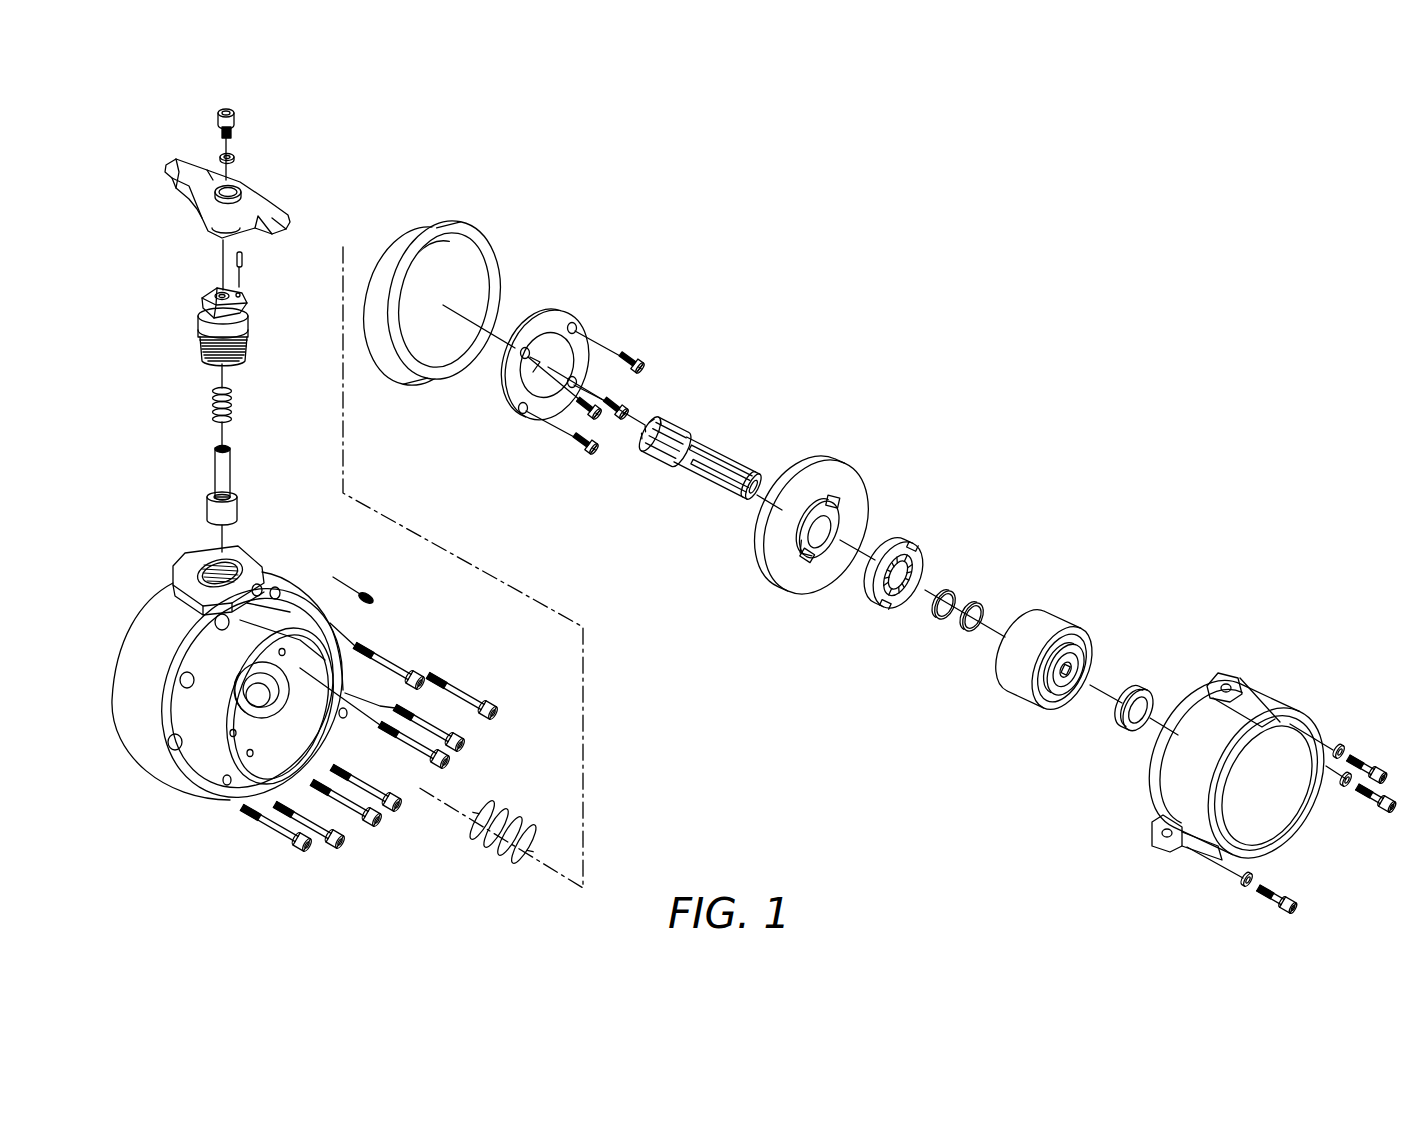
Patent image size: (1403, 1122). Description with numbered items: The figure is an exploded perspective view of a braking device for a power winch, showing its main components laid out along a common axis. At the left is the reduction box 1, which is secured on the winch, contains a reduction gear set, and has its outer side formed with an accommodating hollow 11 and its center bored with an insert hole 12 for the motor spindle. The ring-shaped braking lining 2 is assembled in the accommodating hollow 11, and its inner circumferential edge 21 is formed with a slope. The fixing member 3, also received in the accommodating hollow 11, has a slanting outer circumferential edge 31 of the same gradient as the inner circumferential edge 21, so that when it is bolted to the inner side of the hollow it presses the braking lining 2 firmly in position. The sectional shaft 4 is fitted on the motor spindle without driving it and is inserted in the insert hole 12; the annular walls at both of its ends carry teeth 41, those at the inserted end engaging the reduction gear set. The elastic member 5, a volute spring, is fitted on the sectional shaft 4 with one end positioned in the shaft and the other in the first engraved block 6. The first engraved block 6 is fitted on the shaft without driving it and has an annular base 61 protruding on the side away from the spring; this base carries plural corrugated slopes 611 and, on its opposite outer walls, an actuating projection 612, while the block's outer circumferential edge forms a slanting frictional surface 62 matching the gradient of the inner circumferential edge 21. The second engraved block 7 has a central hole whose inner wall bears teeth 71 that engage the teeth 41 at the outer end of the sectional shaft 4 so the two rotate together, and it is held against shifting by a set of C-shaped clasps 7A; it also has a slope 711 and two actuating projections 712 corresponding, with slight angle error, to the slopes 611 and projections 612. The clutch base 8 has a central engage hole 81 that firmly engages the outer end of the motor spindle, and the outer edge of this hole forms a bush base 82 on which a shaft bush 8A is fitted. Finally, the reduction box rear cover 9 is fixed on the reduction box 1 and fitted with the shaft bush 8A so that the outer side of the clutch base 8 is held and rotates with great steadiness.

The reduction box 1 is at (296, 506).
The accommodating hollow 11 is at (248, 752).
The insert hole 12 is at (307, 722).
The braking lining 2 is at (432, 297).
The inner circumferential edge 21 is at (428, 358).
The fixing member 3 is at (567, 332).
The slanting outer circumferential edge 31 is at (538, 320).
The sectional shaft 4 is at (701, 397).
The teeth 41 is at (659, 418).
The elastic member 5 is at (498, 868).
The first engraved block 6 is at (818, 496).
The annular base 61 is at (818, 508).
The corrugated slopes 611 is at (812, 548).
The actuating projection 612 is at (805, 515).
The slanting frictional surface 62 is at (798, 473).
The second engraved block 7 is at (905, 605).
The teeth 71 is at (944, 536).
The slope 711 is at (863, 578).
The actuating projections 712 is at (905, 558).
The C-shaped clasps 7A is at (943, 612).
The clutch base 8 is at (1063, 653).
The central engage hole 81 is at (1076, 690).
The bush base 82 is at (1072, 668).
The shaft bush 8A is at (1140, 692).
The reduction box rear cover 9 is at (1278, 697).